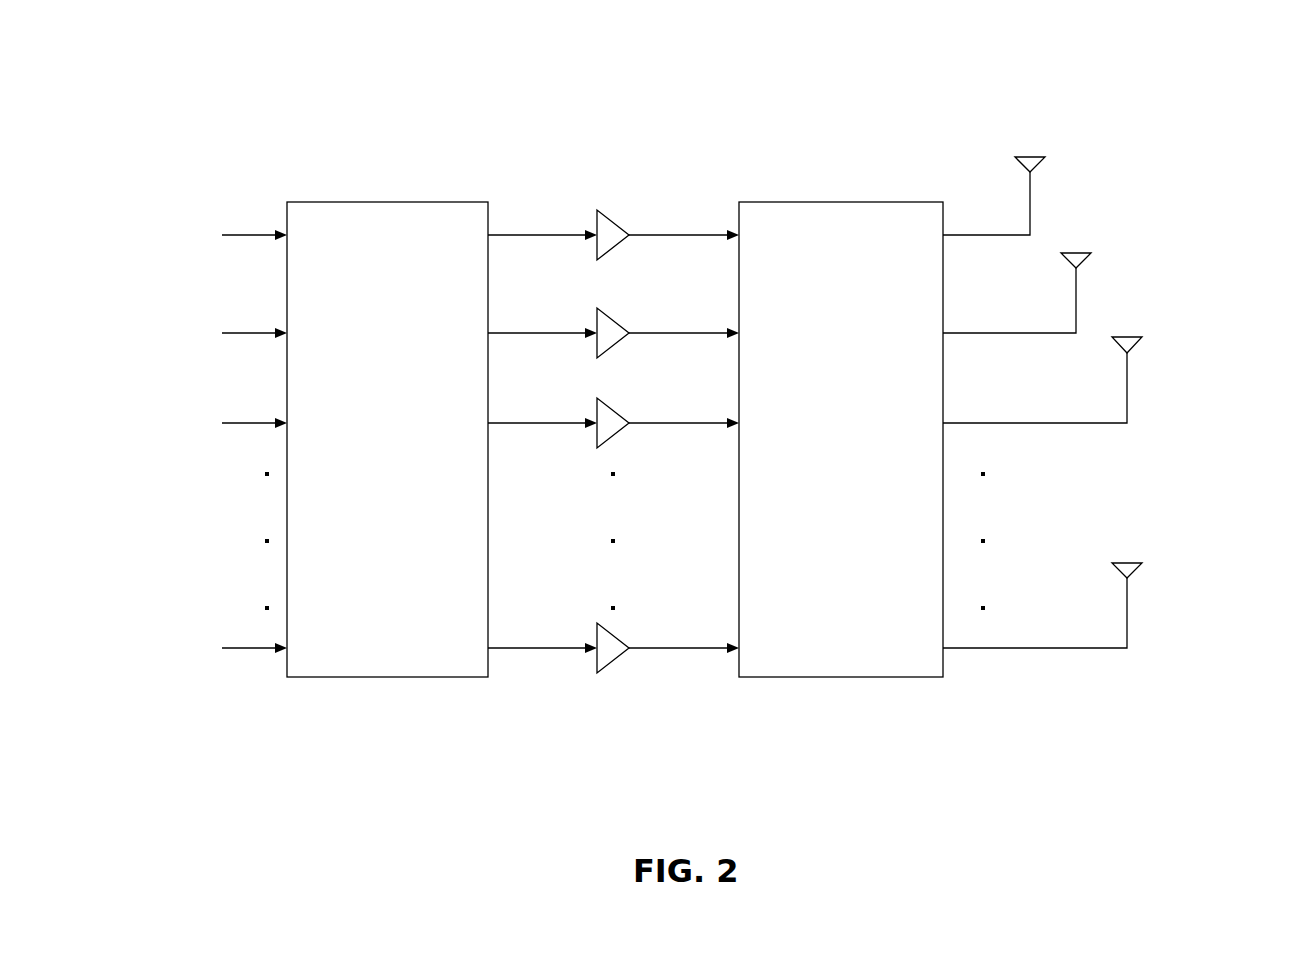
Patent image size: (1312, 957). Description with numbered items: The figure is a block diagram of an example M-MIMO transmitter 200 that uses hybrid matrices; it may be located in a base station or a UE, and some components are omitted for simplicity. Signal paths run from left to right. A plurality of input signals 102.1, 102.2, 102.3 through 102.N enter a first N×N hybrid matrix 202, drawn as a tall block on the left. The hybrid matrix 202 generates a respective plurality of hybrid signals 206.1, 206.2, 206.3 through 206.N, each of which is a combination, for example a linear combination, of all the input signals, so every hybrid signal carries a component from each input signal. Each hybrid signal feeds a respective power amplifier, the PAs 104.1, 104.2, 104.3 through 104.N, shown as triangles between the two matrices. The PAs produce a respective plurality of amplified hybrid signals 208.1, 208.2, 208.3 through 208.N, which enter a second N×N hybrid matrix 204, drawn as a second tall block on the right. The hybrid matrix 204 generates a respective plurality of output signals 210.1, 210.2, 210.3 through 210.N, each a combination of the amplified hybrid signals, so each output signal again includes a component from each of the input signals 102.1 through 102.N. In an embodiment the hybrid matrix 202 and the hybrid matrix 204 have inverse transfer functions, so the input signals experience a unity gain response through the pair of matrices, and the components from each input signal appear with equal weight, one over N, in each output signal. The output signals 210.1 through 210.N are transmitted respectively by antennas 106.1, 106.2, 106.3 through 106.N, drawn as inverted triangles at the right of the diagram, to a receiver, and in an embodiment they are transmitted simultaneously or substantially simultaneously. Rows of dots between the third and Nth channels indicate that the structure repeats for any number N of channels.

The M-MIMO transmitter 200 is at (1297, 66).
The first N×N hybrid matrix 202 is at (387, 439).
The second N×N hybrid matrix 204 is at (841, 439).
The input signal 102.1 is at (234, 232).
The input signal 102.2 is at (234, 330).
The input signal 102.3 is at (234, 420).
The input signal 102.N is at (229, 643).
The PA 104.1 is at (610, 212).
The PA 104.2 is at (620, 315).
The PA 104.3 is at (614, 410).
The PA 104.N is at (615, 633).
The antenna 106.1 is at (1026, 154).
The antenna 106.2 is at (1076, 250).
The antenna 106.3 is at (1126, 337).
The antenna 106.N is at (1126, 559).
The hybrid signal 206.1 is at (532, 231).
The hybrid signal 206.2 is at (532, 329).
The hybrid signal 206.3 is at (532, 420).
The hybrid signal 206.N is at (532, 644).
The amplified hybrid signal 208.1 is at (700, 231).
The amplified hybrid signal 208.2 is at (700, 329).
The amplified hybrid signal 208.3 is at (700, 420).
The amplified hybrid signal 208.N is at (699, 652).
The output signal 210.1 is at (973, 230).
The output signal 210.2 is at (973, 329).
The output signal 210.3 is at (973, 417).
The output signal 210.N is at (1012, 652).